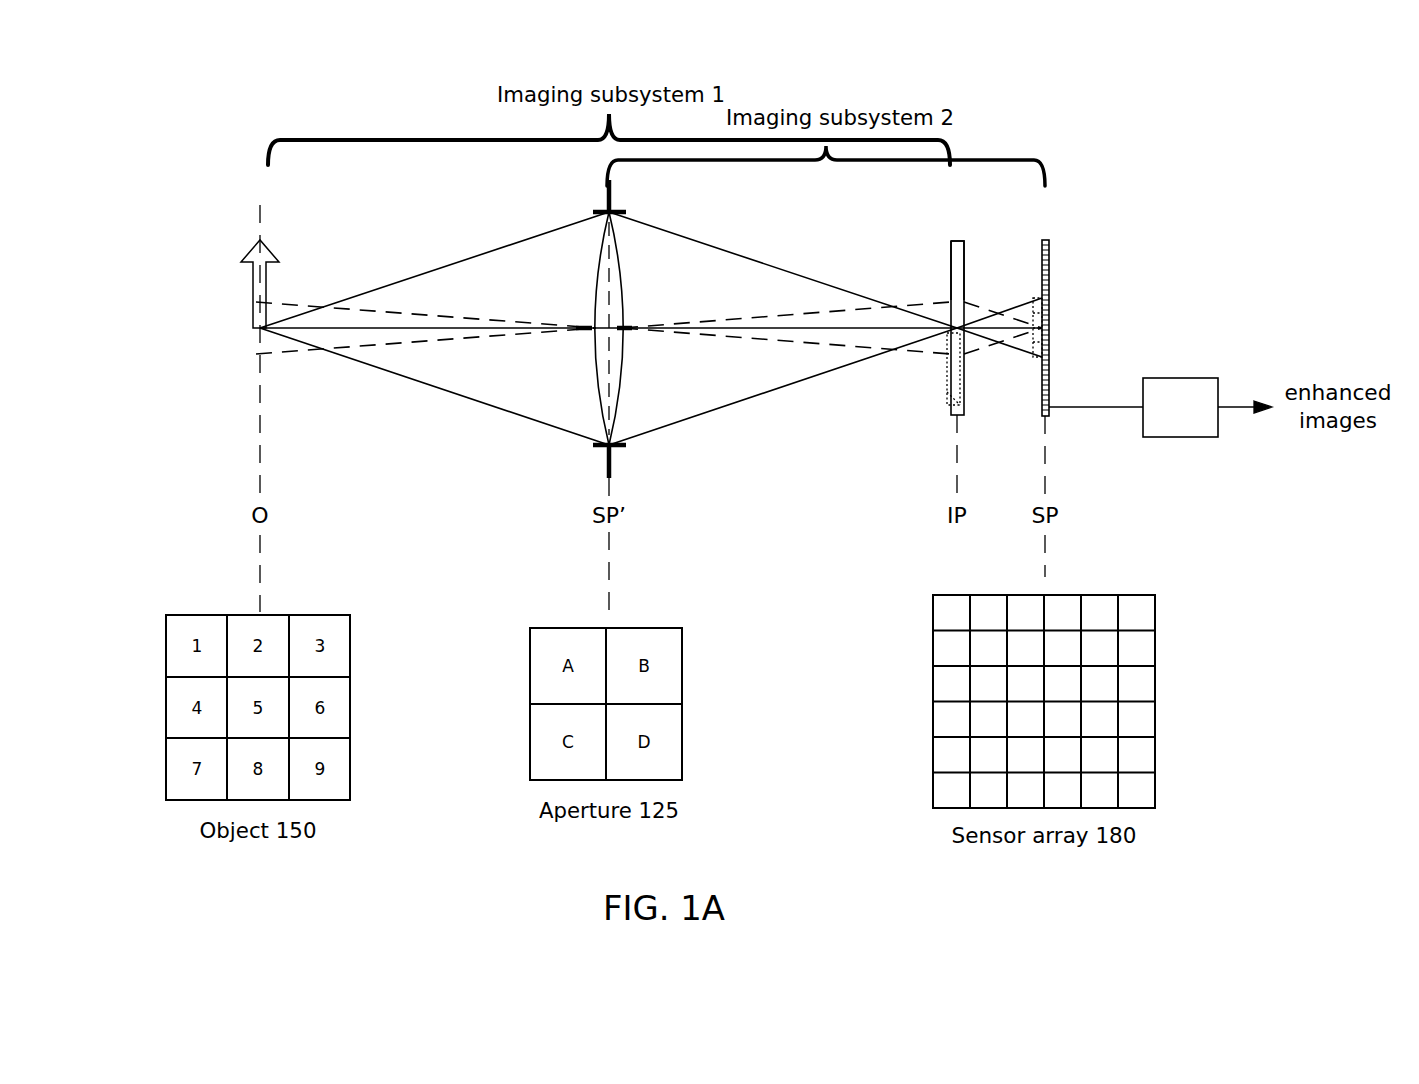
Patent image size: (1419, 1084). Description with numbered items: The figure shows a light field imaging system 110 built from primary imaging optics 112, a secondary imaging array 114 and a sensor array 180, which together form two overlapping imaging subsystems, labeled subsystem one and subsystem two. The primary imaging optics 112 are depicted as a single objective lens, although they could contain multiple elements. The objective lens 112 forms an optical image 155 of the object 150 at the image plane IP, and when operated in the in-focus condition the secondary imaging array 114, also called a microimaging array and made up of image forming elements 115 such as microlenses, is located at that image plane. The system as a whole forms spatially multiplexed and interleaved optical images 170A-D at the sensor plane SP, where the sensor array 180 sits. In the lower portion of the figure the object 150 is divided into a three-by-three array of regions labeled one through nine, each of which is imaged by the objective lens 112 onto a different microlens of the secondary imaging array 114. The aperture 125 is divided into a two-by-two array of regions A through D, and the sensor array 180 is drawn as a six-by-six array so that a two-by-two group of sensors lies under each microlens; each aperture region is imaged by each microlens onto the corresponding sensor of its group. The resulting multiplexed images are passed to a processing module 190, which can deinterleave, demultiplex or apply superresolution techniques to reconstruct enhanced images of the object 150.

The light field imaging system 110 is at (1097, 222).
The primary imaging optics 112 is at (597, 245).
The secondary imaging array 114 is at (938, 237).
The image forming elements 115 is at (949, 277).
The aperture 125 is at (630, 237).
The object 150 is at (270, 267).
The optical image 155 is at (945, 392).
The spatially multiplexed optical images 170A-D is at (1032, 302).
The sensor array 180 is at (1050, 268).
The processing module 190 is at (1160, 407).